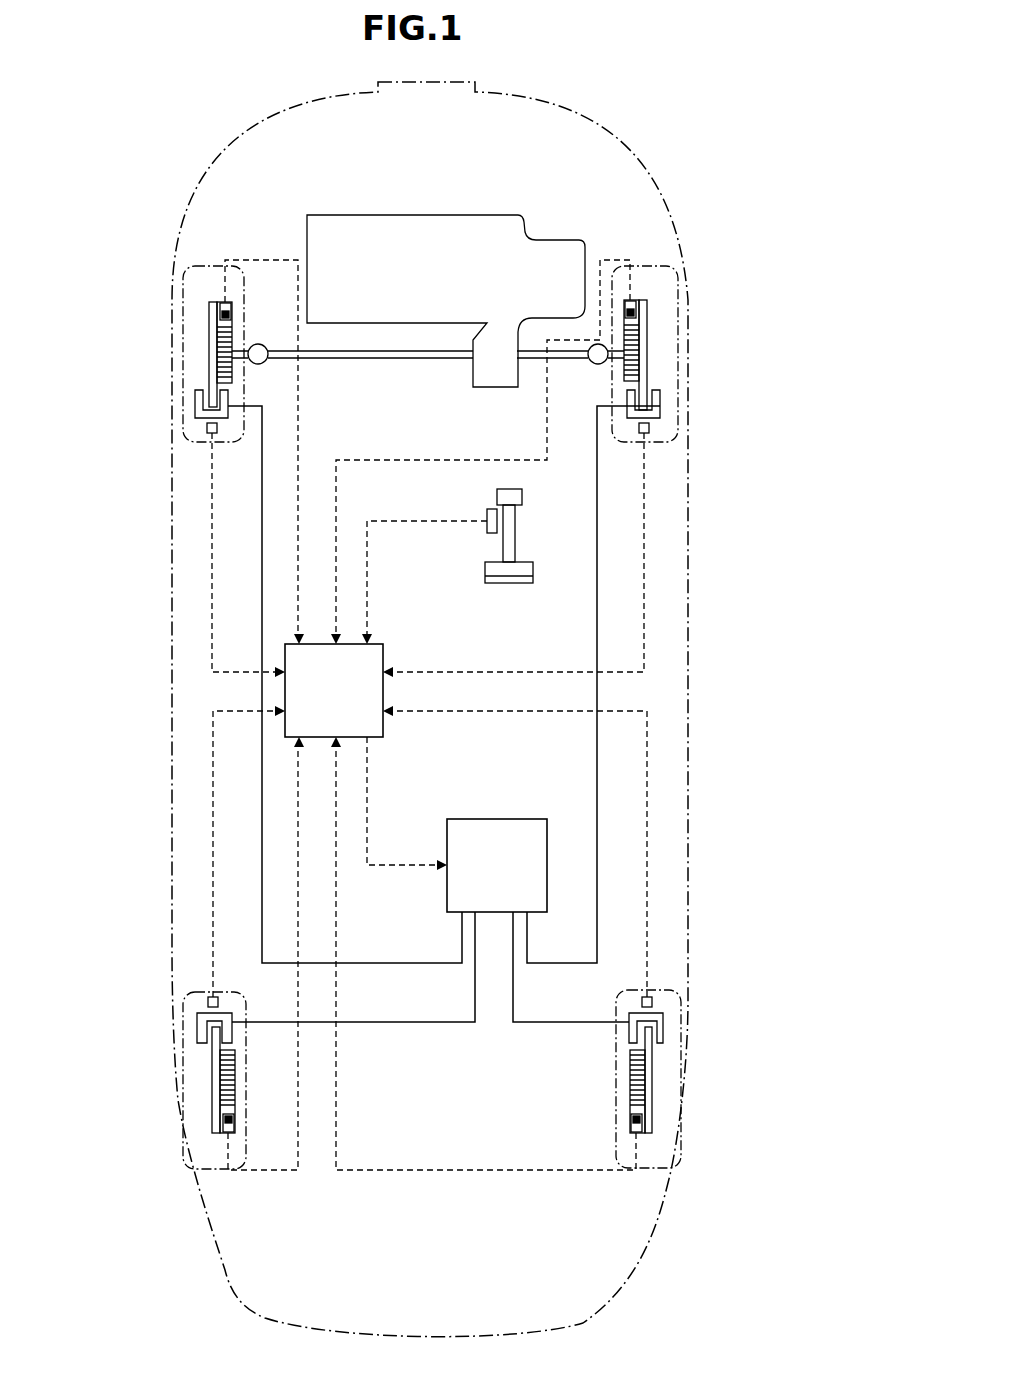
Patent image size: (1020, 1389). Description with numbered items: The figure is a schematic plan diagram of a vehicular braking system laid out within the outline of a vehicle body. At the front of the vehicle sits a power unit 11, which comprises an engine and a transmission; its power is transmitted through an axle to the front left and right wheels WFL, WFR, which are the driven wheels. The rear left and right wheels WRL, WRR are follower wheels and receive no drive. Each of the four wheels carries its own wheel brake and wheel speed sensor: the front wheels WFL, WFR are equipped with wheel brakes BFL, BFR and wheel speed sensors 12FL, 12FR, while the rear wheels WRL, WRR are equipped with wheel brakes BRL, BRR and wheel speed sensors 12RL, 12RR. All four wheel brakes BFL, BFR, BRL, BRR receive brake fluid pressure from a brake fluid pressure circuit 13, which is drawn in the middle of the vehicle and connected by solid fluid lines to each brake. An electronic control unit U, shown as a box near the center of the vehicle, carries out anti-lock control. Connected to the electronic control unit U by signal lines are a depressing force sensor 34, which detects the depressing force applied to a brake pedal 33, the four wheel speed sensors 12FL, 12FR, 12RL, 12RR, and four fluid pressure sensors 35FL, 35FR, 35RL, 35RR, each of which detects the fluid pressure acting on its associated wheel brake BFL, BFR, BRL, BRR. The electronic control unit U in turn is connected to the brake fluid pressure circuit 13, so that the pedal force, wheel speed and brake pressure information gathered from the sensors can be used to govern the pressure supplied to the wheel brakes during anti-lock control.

The power unit 11 is at (433, 284).
The electronic control unit U is at (344, 708).
The brake fluid pressure circuit 13 is at (507, 878).
The brake pedal 33 is at (507, 578).
The depressing force sensor 34 is at (495, 512).
The front left wheel WFL is at (205, 266).
The front right wheel WFR is at (640, 265).
The rear left wheel WRL is at (178, 1092).
The rear right wheel WRR is at (660, 1193).
The wheel speed sensor 12FL is at (227, 310).
The wheel speed sensor 12FR is at (632, 305).
The wheel speed sensor 12RL is at (215, 1128).
The wheel speed sensor 12RR is at (633, 1125).
The wheel brake BFL is at (195, 400).
The wheel brake BFR is at (660, 398).
The wheel brake BRL is at (197, 1022).
The wheel brake BRR is at (665, 1028).
The fluid pressure sensor 35FL is at (207, 428).
The fluid pressure sensor 35FR is at (650, 428).
The fluid pressure sensor 35RL is at (208, 1002).
The fluid pressure sensor 35RR is at (653, 1000).